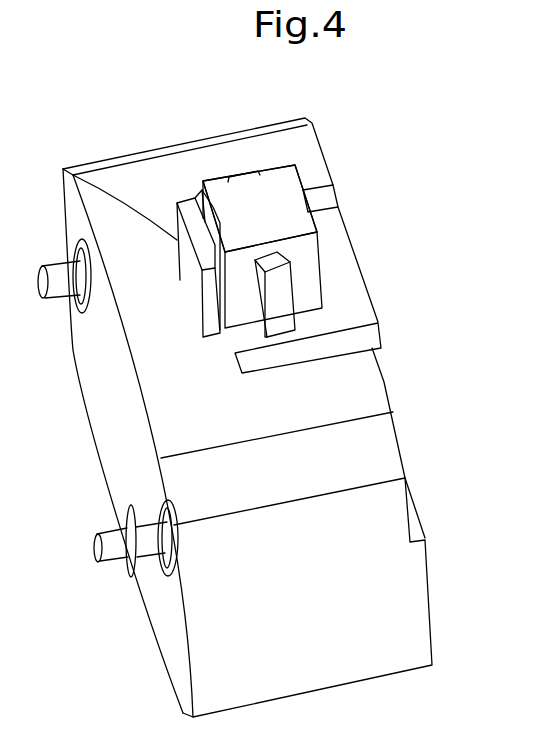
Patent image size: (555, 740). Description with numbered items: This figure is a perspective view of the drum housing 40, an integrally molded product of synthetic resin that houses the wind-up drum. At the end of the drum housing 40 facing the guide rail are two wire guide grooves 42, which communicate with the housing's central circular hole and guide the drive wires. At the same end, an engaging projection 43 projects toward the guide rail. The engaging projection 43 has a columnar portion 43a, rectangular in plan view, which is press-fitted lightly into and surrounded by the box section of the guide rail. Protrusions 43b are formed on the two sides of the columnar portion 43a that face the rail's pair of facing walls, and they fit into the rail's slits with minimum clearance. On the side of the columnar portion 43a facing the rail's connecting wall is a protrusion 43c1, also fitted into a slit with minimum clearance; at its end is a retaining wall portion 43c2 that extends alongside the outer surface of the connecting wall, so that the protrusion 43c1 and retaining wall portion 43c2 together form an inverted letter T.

The drum housing 40 is at (458, 181).
The wire guide grooves 42 is at (322, 196).
The engaging projection 43 is at (239, 196).
The columnar portion 43a is at (281, 187).
The protrusions 43b is at (239, 172).
The protrusion 43c1 is at (205, 222).
The retaining wall portion 43c2 is at (140, 212).